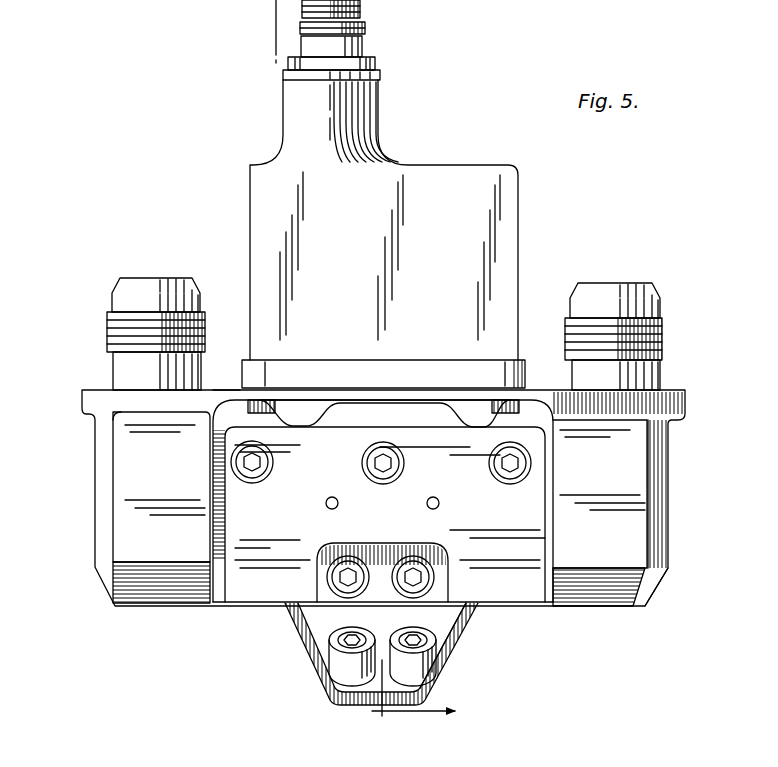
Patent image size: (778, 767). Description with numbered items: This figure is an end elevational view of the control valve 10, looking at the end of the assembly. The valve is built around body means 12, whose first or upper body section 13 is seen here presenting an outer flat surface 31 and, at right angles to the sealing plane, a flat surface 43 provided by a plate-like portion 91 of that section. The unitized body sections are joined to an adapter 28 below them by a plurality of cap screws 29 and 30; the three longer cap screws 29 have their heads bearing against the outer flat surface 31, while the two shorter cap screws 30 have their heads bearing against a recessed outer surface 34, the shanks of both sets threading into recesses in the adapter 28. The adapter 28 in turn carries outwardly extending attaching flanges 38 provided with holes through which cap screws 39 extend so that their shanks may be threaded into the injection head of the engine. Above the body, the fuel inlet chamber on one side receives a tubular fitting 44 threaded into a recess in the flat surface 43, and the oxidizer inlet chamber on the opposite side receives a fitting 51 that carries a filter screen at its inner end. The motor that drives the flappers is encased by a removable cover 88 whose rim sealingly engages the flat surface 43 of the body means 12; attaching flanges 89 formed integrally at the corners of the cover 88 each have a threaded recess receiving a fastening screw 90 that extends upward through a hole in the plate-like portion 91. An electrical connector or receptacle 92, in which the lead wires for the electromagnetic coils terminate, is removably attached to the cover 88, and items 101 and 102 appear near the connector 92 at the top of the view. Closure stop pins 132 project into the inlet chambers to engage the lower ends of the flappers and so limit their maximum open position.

The control valve 10 is at (241, 184).
The body means 12 is at (648, 612).
The first or upper body section 13 is at (655, 582).
The adapter 28 is at (290, 620).
The cap screws 29 is at (252, 478).
The cap screws 30 is at (412, 546).
The outer flat surface 31 is at (437, 452).
The recessed outer surface 34 is at (445, 592).
The attaching flanges 38 is at (446, 626).
The cap screws 39 is at (409, 630).
The flat surface 43 is at (222, 388).
The fitting 44 is at (665, 365).
The fitting 51 is at (110, 358).
The removable cover 88 is at (518, 190).
The attaching flanges 89 is at (504, 365).
The fastening screw 90 is at (288, 400).
The plate-like portion 91 is at (370, 398).
The electrical connector or receptacle 92 is at (365, 28).
The connector 101 is at (409, 41).
The connector cap 102 is at (492, 0).
The closure stop pins 132 is at (331, 511).